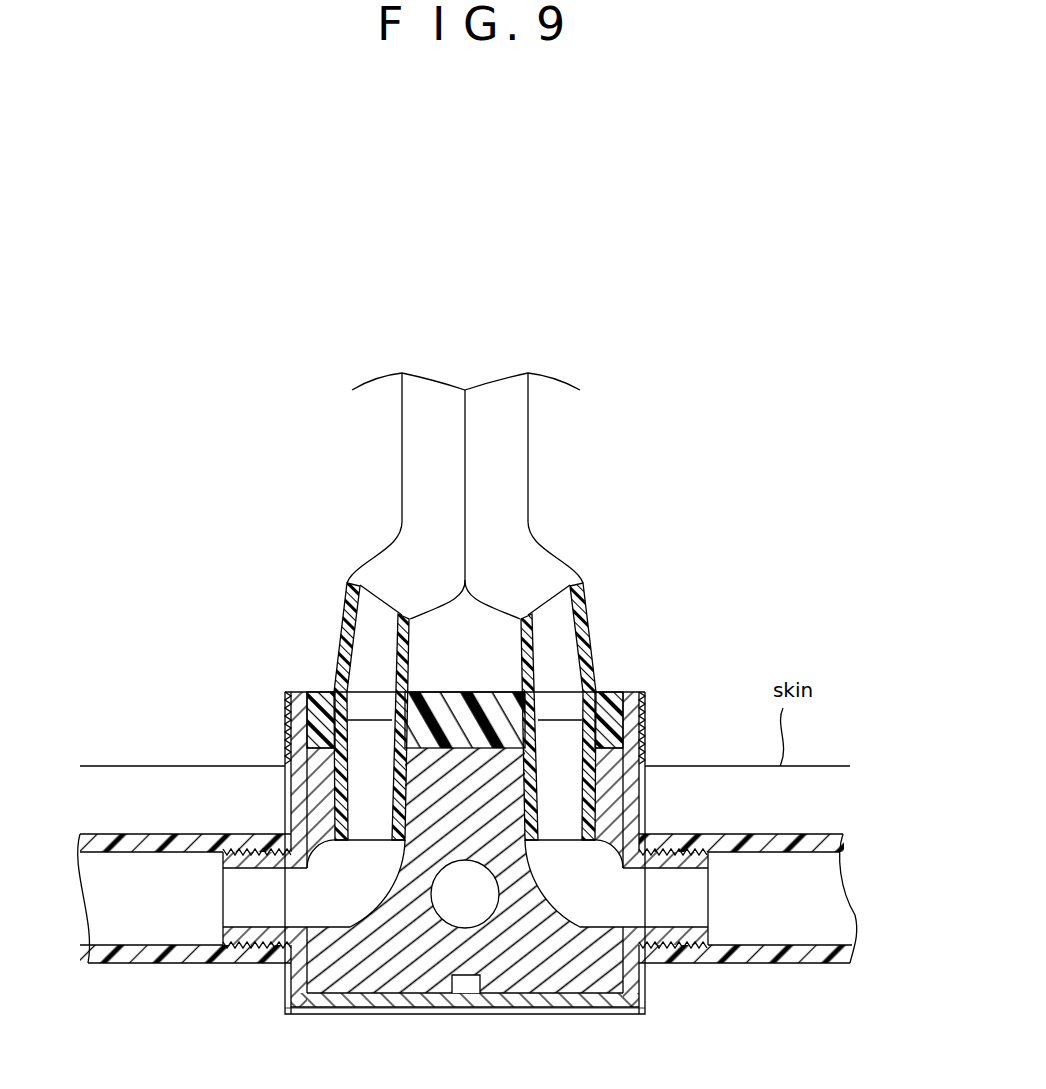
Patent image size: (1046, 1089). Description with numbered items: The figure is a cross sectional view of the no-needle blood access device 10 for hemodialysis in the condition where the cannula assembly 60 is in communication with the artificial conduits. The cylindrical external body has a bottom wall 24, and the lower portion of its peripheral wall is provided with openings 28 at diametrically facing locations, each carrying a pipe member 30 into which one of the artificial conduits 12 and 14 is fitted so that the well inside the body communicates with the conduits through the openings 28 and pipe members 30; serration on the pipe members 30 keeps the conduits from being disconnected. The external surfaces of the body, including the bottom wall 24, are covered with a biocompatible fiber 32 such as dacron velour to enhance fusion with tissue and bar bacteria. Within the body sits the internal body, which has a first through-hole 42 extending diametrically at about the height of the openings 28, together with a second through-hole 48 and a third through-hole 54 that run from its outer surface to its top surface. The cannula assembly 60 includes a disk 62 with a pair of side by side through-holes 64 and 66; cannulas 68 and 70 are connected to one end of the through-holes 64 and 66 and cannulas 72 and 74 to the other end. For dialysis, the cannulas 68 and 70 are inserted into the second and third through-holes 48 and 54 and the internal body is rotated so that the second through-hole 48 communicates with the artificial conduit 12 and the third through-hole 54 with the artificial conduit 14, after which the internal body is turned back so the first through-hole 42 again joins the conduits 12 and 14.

The no-needle blood access device 10 is at (220, 590).
The artificial conduit 12 is at (123, 964).
The artificial conduit 14 is at (810, 964).
The bottom wall 24 is at (605, 1004).
The openings 28 is at (298, 896).
The pipe members 30 is at (238, 942).
The biocompatible fiber 32 is at (285, 804).
The first through-hole 42 is at (448, 912).
The second through-hole 48 is at (345, 900).
The third through-hole 54 is at (567, 900).
The cannula assembly 60 is at (451, 496).
The disk 62 is at (468, 690).
The through-hole 64 is at (398, 695).
The through-hole 66 is at (532, 692).
The cannula 68 is at (335, 770).
The cannula 70 is at (596, 775).
The cannula 72 is at (402, 412).
The cannula 74 is at (528, 418).